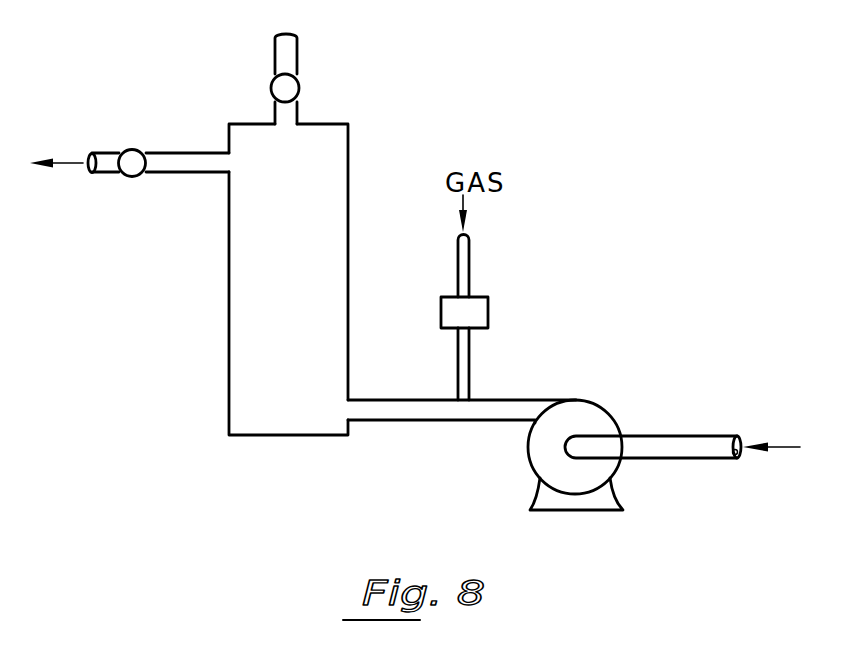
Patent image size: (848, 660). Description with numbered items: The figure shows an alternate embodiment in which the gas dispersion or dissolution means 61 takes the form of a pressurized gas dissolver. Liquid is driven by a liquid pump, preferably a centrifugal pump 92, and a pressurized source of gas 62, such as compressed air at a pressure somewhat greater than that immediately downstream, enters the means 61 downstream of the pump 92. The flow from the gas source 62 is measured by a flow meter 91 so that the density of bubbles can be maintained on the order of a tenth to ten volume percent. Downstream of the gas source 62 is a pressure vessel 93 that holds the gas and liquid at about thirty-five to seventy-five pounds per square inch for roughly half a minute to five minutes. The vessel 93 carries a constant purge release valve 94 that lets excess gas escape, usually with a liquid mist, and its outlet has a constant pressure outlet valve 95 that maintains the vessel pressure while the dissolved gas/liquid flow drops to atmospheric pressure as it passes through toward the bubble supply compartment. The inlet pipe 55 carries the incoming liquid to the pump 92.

The pressure vessel 93 is at (302, 274).
The constant purge release valve 94 is at (300, 87).
The constant pressure outlet valve 95 is at (135, 176).
The gas dispersion or dissolution means 61 is at (426, 426).
The source of gas 62 is at (470, 365).
The flow meter 91 is at (490, 315).
The centrifugal pump 92 is at (605, 411).
The inlet pipe 55 is at (685, 435).